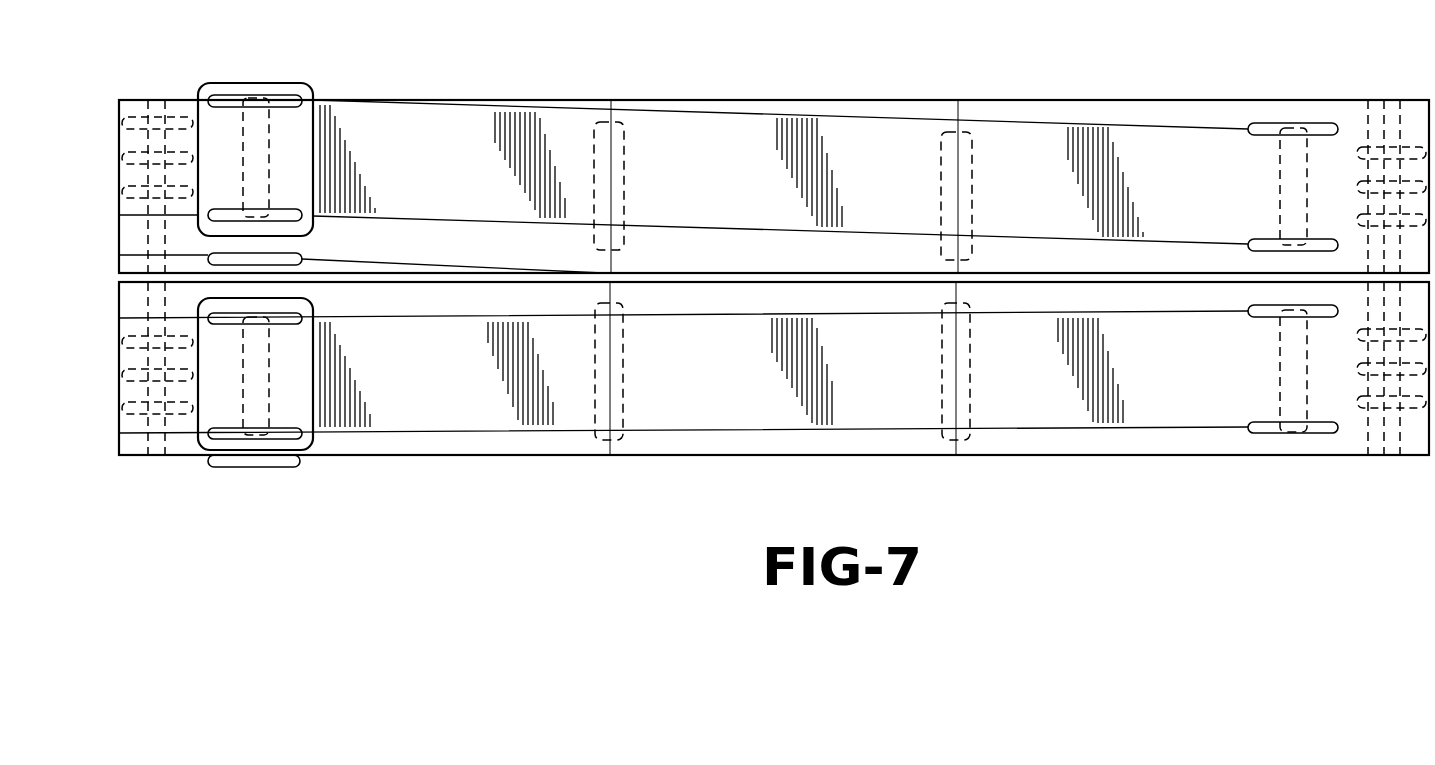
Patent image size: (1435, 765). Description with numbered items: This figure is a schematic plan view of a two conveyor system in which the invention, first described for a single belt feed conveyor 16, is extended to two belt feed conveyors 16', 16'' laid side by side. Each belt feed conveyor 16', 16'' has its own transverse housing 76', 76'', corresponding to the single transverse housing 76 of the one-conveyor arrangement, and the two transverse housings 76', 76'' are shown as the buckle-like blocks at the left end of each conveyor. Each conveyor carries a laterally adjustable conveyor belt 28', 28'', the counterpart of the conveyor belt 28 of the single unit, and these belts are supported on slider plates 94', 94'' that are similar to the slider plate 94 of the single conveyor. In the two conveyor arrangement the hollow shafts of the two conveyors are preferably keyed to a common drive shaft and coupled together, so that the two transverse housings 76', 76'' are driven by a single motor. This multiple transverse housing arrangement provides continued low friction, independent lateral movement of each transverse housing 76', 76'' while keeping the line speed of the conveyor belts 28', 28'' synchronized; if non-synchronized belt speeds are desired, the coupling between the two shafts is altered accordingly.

The transverse housing 76' is at (255, 127).
The transverse housing 76'' is at (255, 411).
The slider plate 94' is at (728, 153).
The slider plate 94'' is at (728, 414).
The belt feed conveyor 16' is at (804, 156).
The belt feed conveyor 16'' is at (806, 403).
The conveyor belt 28' is at (753, 145).
The conveyor belt 28'' is at (755, 417).
The transverse housing 76 is at (255, 271).
The slider plate 94 is at (728, 278).
The belt feed conveyor 16 is at (805, 281).
The conveyor belt 28 is at (755, 285).